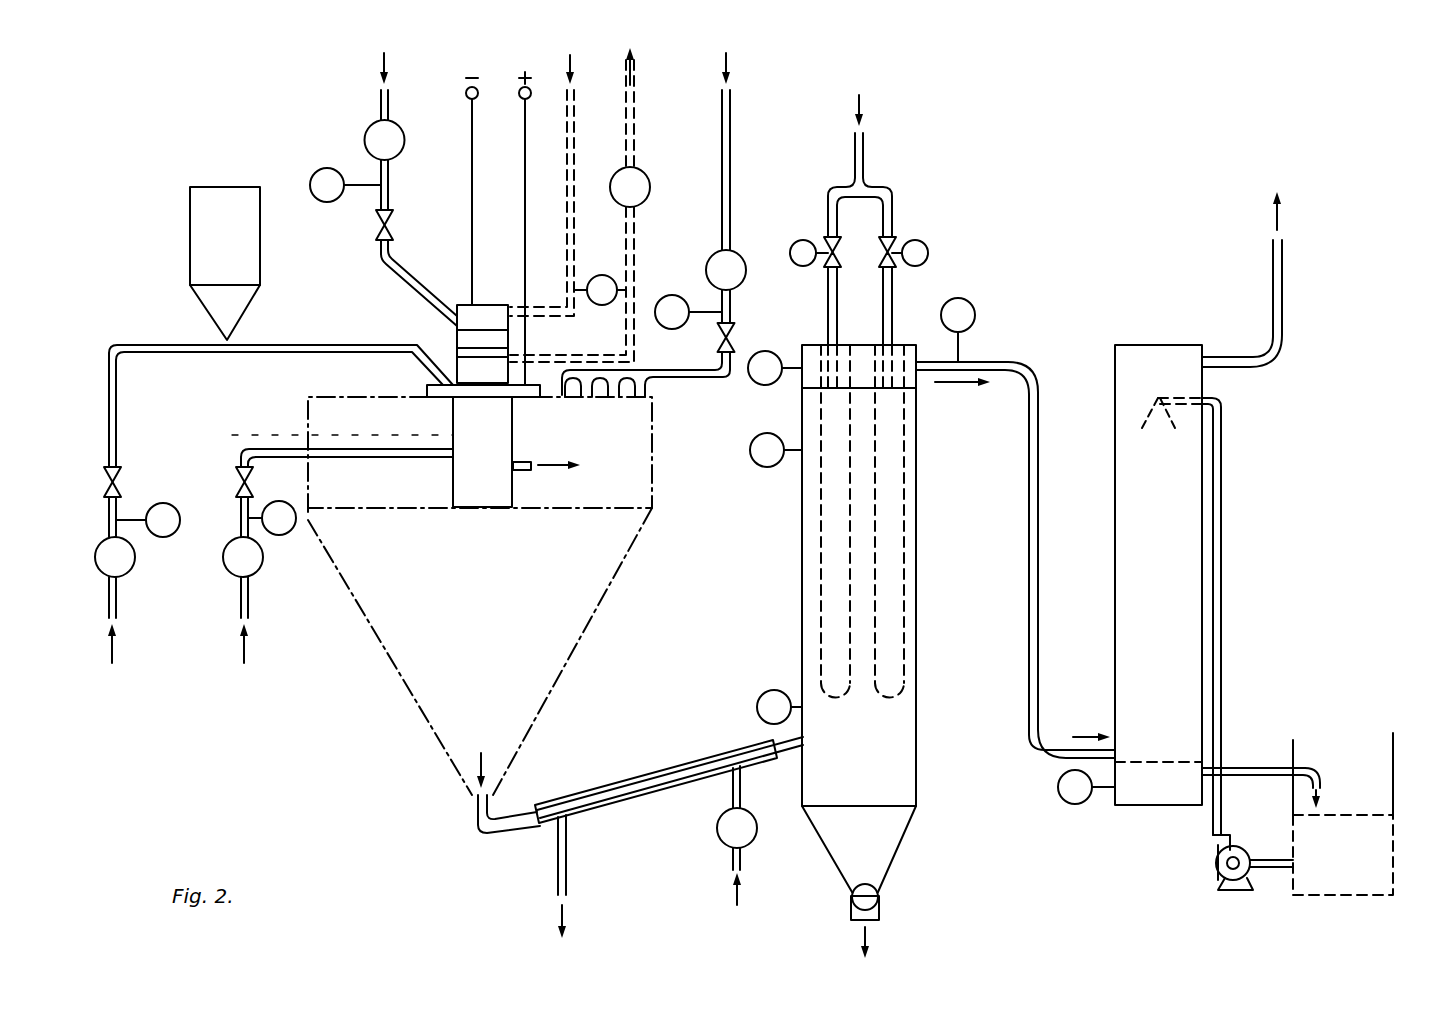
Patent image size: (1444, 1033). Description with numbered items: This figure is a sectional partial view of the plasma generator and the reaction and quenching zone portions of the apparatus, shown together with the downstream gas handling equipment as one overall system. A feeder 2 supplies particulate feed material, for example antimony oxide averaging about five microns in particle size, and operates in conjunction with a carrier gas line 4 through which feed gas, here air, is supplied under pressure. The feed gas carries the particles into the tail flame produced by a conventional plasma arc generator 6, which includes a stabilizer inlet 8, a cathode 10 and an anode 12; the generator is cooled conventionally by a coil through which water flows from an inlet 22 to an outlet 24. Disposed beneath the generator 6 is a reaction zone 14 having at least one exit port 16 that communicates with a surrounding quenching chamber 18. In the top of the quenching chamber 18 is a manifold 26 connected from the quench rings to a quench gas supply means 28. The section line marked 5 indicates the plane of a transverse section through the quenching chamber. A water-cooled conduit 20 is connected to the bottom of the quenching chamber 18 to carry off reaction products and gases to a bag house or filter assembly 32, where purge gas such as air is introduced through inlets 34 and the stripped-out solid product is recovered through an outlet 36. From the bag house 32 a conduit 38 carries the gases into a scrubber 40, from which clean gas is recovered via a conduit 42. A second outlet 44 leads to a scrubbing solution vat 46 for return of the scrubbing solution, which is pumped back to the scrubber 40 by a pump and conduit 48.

The feeder 2 is at (250, 268).
The carrier gas line 4 is at (117, 390).
The section line indicator 5 is at (308, 512).
The plasma arc generator 6 is at (419, 283).
The stabilizer inlet 8 is at (390, 191).
The cathode 10 is at (478, 268).
The anode 12 is at (530, 268).
The reaction zone 14 is at (512, 432).
The exit port 16 is at (531, 472).
The quenching chamber 18 is at (632, 562).
The conduit 20 is at (615, 783).
The inlet 22 is at (567, 158).
The outlet 24 is at (634, 150).
The manifold 26 is at (706, 377).
The quench gas supply means 28 is at (732, 312).
The bag house or filter assembly 32 is at (920, 596).
The inlets 34 is at (837, 325).
The outlet 36 is at (880, 905).
The conduit 38 is at (992, 357).
The scrubber 40 is at (1142, 596).
The conduit 42 is at (1285, 300).
The second outlet 44 is at (1247, 765).
The scrubbing solution vat 46 is at (1383, 853).
The pump and conduit 48 is at (1237, 835).